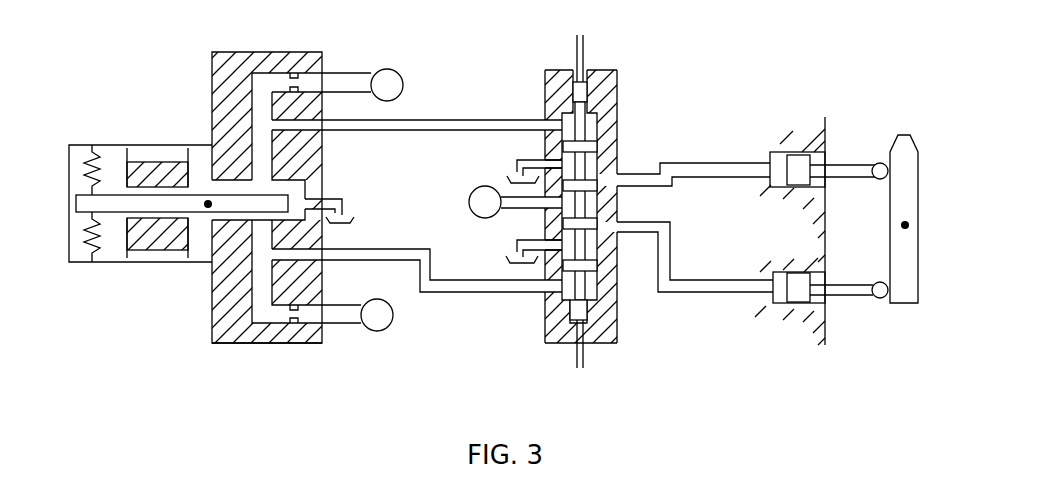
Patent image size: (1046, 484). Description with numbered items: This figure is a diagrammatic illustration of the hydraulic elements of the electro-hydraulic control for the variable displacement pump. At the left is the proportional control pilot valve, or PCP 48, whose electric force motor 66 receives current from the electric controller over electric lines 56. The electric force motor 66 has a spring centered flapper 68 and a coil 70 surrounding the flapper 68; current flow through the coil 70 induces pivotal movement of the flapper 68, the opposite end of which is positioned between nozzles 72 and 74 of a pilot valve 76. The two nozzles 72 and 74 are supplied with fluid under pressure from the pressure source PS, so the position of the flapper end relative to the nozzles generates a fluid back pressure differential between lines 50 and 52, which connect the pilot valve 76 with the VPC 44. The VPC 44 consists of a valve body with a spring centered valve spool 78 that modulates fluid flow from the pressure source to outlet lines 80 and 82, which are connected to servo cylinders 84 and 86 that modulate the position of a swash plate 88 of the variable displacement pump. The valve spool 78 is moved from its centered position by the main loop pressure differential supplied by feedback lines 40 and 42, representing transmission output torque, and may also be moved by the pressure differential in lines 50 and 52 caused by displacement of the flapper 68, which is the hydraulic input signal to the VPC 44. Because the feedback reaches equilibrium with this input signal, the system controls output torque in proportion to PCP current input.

The feedback line 40 is at (585, 54).
The feedback line 42 is at (584, 355).
The VPC 44 is at (543, 331).
The proportional control pilot valve 48 is at (150, 345).
The line 50 is at (356, 132).
The line 52 is at (383, 248).
The electric lines 56 is at (187, 162).
The electric force motor 66 is at (105, 145).
The flapper 68 is at (87, 207).
The coil 70 is at (155, 238).
The nozzle 72 is at (235, 130).
The nozzle 74 is at (218, 285).
The pilot valve 76 is at (276, 344).
The valve spool 78 is at (589, 149).
The outlet line 80 is at (722, 178).
The outlet line 82 is at (713, 293).
The servo cylinder 84 is at (779, 165).
The servo cylinder 86 is at (780, 305).
The swash plate 88 is at (913, 180).